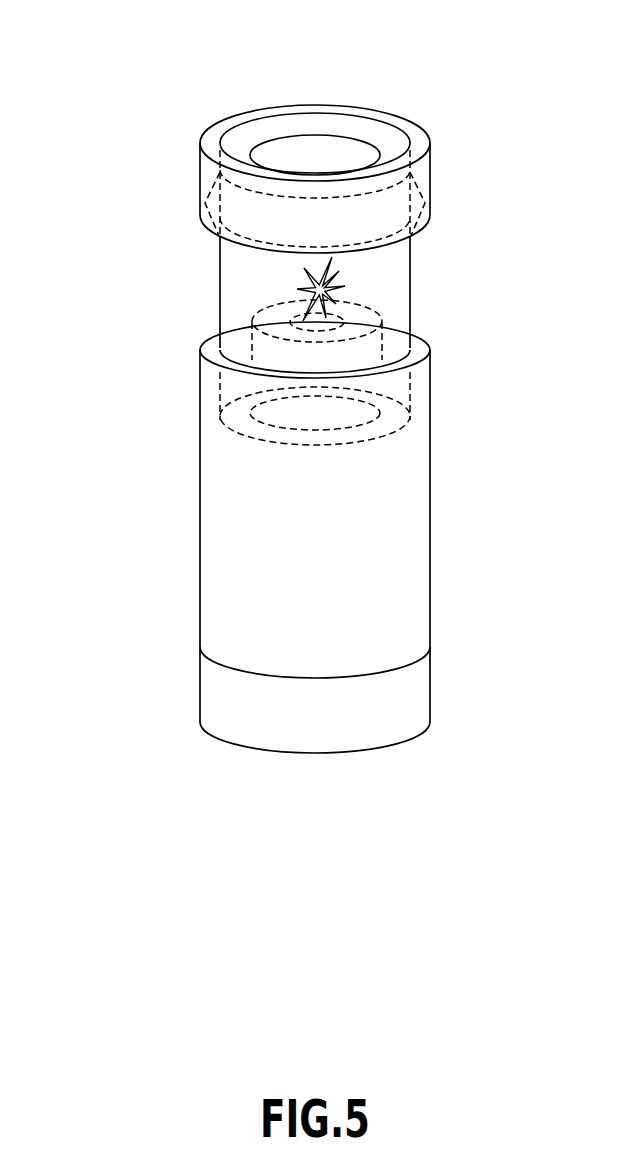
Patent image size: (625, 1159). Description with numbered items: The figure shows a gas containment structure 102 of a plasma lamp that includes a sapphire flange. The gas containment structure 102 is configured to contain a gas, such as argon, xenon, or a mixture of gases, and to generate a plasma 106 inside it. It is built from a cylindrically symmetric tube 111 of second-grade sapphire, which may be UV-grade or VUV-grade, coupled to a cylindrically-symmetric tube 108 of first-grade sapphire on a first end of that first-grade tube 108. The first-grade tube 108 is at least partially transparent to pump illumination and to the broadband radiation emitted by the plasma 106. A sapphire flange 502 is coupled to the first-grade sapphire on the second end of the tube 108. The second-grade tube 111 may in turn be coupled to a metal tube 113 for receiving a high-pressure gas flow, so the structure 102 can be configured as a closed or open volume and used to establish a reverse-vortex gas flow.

The gas containment structure 102 is at (115, 42).
The sapphire flange 502 is at (233, 140).
The first portion 108 is at (220, 290).
The plasma 106 is at (343, 287).
The second portion 111 is at (200, 520).
The metal tube 113 is at (200, 690).